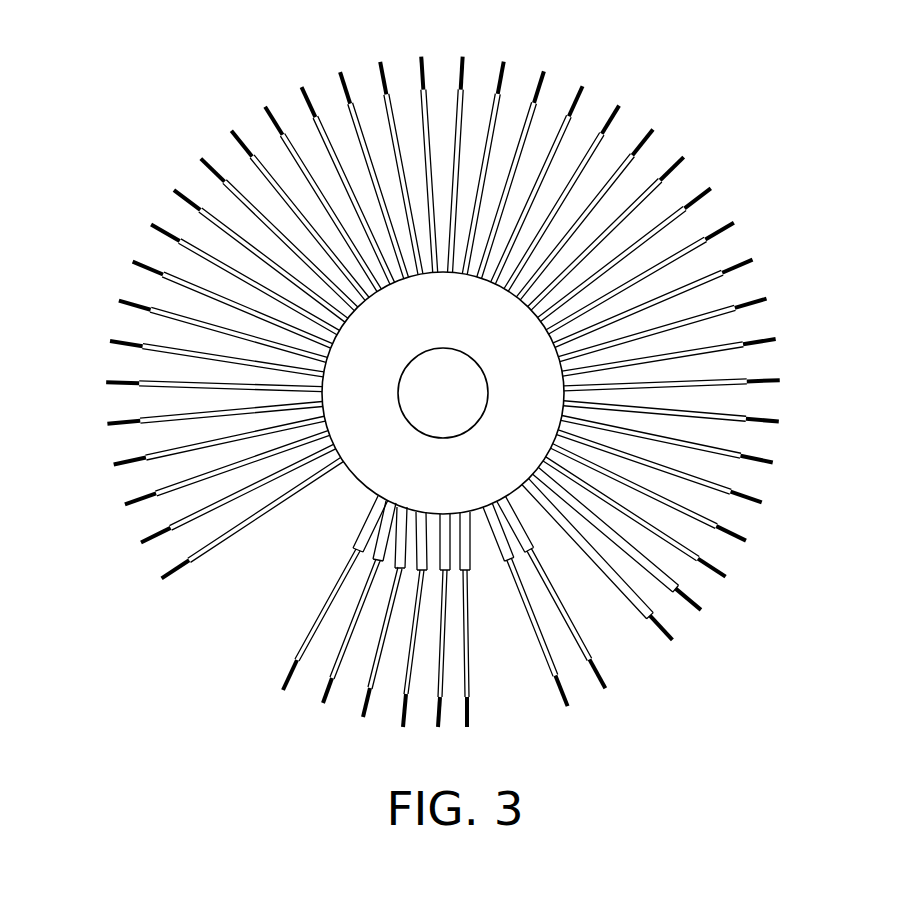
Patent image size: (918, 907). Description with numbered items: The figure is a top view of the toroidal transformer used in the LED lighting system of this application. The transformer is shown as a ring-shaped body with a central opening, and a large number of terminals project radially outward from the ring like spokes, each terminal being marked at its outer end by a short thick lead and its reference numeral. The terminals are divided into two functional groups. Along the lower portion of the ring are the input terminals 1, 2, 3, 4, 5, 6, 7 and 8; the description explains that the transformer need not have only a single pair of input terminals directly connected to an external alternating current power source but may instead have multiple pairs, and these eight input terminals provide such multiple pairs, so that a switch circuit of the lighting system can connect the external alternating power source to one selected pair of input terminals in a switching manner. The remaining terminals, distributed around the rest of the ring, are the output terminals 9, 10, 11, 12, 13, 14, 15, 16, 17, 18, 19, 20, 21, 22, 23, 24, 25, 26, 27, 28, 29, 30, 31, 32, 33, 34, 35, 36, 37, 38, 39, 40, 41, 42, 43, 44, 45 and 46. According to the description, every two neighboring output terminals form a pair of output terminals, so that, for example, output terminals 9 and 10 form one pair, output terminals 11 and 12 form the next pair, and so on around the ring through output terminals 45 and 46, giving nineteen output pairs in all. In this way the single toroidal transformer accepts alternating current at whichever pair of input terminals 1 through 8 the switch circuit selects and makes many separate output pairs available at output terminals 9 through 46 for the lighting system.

The input terminal 1 is at (329, 604).
The input terminal 2 is at (354, 615).
The input terminal 3 is at (380, 626).
The input terminal 4 is at (412, 632).
The input terminal 5 is at (444, 633).
The input terminal 6 is at (475, 632).
The input terminal 7 is at (533, 619).
The input terminal 8 is at (560, 606).
The output terminal 9 is at (609, 571).
The output terminal 10 is at (629, 549).
The output terminal 11 is at (647, 525).
The output terminal 12 is at (661, 499).
The output terminal 13 is at (672, 472).
The output terminal 14 is at (680, 443).
The output terminal 15 is at (685, 413).
The output terminal 16 is at (686, 384).
The output terminal 17 is at (683, 353).
The output terminal 18 is at (676, 325).
The output terminal 19 is at (666, 296).
The output terminal 20 is at (652, 270).
The output terminal 21 is at (636, 245).
The output terminal 22 is at (616, 222).
The output terminal 23 is at (594, 203).
The output terminal 24 is at (570, 185).
The output terminal 25 is at (544, 172).
The output terminal 26 is at (516, 161).
The output terminal 27 is at (487, 154).
The output terminal 28 is at (457, 150).
The output terminal 29 is at (427, 150).
The output terminal 30 is at (397, 154).
The output terminal 31 is at (369, 161).
The output terminal 32 is at (341, 172).
The output terminal 33 is at (315, 187).
The output terminal 34 is at (290, 204).
The output terminal 35 is at (268, 224).
The output terminal 36 is at (248, 246).
The output terminal 37 is at (233, 272).
The output terminal 38 is at (219, 298).
The output terminal 39 is at (209, 326).
The output terminal 40 is at (203, 356).
The output terminal 41 is at (200, 385).
The output terminal 42 is at (201, 415).
The output terminal 43 is at (205, 445).
The output terminal 44 is at (213, 473).
The output terminal 45 is at (225, 501).
The output terminal 46 is at (240, 526).